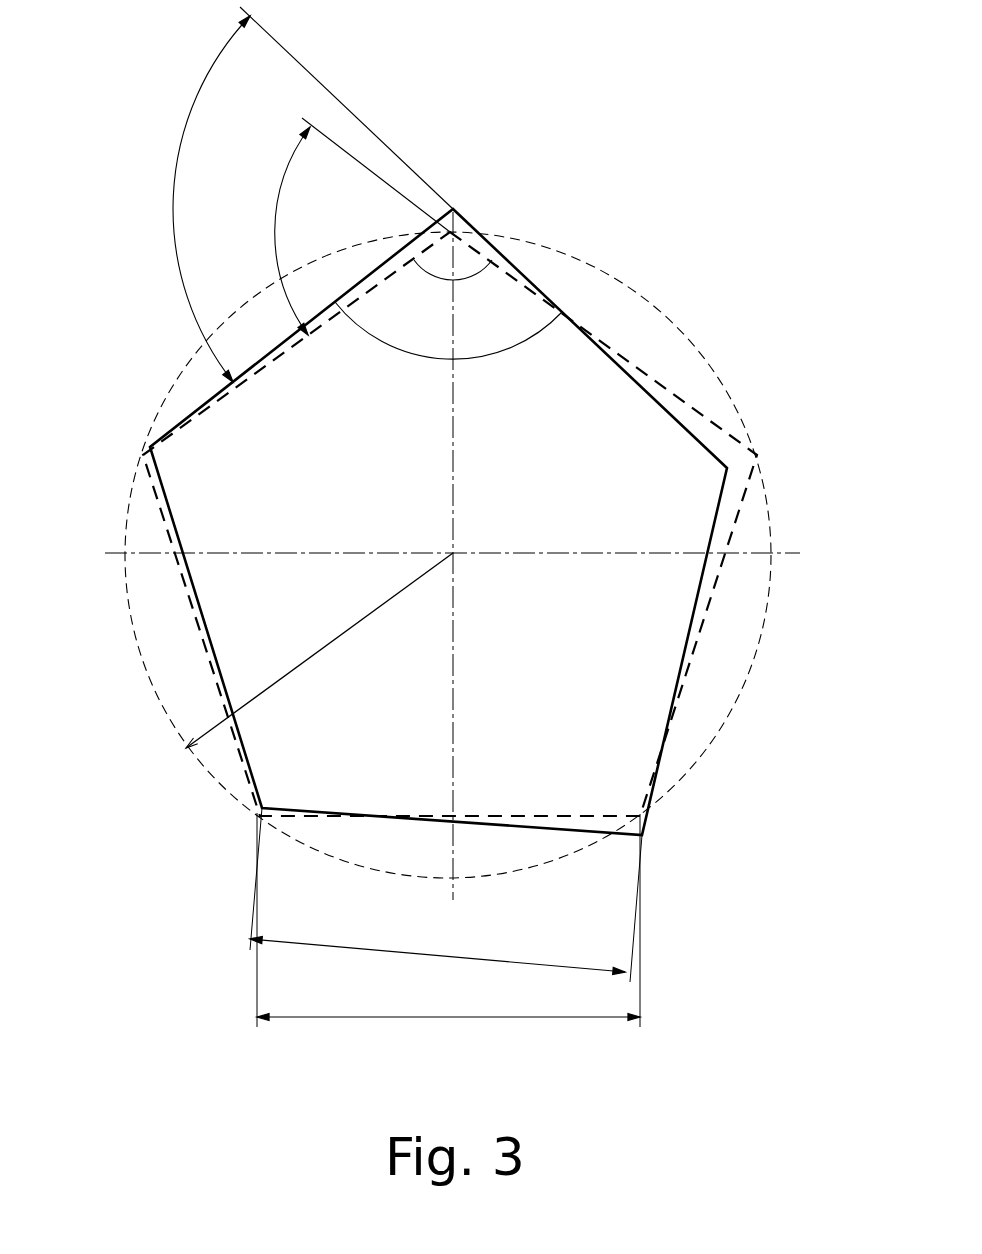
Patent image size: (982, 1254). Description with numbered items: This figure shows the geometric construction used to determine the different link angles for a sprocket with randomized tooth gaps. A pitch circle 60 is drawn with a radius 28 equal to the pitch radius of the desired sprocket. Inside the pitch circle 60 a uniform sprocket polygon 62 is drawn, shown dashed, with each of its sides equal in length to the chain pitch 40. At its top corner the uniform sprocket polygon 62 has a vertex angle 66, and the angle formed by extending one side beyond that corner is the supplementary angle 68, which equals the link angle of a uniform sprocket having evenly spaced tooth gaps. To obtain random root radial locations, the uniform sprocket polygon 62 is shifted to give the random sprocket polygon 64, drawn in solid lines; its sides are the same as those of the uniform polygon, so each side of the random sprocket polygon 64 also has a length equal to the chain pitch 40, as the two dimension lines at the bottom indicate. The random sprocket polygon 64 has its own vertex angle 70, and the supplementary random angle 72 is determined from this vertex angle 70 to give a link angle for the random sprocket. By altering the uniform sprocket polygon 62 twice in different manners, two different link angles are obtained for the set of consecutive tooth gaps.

The pitch circle 60 is at (676, 325).
The uniform sprocket polygon 62 is at (712, 598).
The random sprocket polygon 64 is at (703, 443).
The vertex angle 66 is at (462, 279).
The vertex angle of random polygon 70 is at (403, 350).
The supplementary angle 68 is at (275, 240).
The supplementary random angle 72 is at (172, 213).
The radius 28 is at (320, 652).
The chain pitch 40 is at (446, 917).